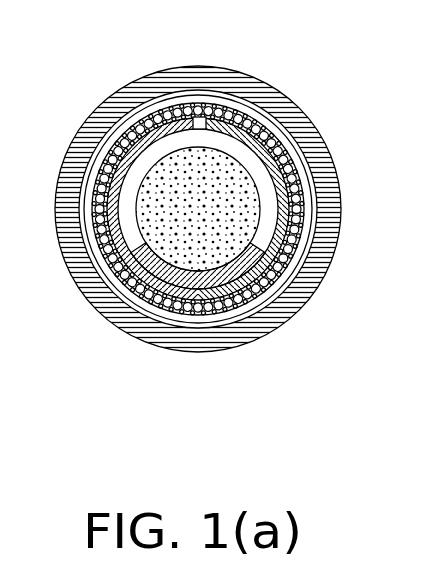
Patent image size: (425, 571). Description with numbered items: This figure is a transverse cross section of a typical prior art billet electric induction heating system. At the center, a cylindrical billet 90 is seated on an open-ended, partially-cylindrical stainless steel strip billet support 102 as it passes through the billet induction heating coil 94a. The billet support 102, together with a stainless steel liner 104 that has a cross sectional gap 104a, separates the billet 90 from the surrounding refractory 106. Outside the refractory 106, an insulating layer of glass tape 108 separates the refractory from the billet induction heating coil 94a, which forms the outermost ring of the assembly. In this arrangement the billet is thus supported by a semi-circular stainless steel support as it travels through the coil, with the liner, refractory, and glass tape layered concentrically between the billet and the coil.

The cylindrical billet 90 is at (215, 222).
The billet induction heating coil 94a is at (283, 100).
The open-ended partially-cylindrical stainless steel strip billet support 102 is at (165, 288).
The stainless steel liner 104 is at (276, 274).
The cross sectional gap 104a is at (200, 117).
The refractory 106 is at (311, 231).
The insulating layer of glass tape 108 is at (287, 127).